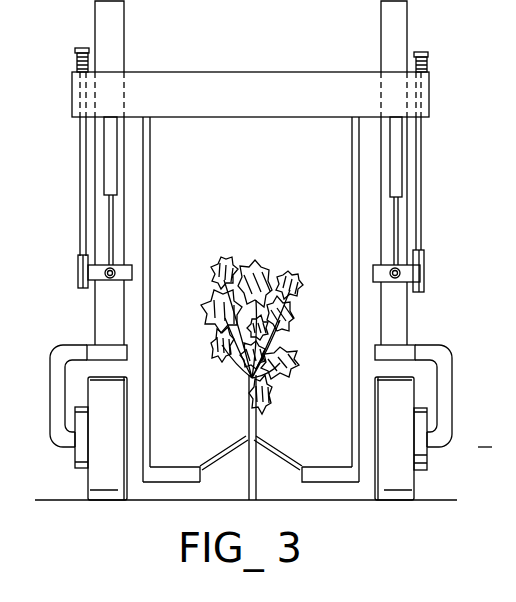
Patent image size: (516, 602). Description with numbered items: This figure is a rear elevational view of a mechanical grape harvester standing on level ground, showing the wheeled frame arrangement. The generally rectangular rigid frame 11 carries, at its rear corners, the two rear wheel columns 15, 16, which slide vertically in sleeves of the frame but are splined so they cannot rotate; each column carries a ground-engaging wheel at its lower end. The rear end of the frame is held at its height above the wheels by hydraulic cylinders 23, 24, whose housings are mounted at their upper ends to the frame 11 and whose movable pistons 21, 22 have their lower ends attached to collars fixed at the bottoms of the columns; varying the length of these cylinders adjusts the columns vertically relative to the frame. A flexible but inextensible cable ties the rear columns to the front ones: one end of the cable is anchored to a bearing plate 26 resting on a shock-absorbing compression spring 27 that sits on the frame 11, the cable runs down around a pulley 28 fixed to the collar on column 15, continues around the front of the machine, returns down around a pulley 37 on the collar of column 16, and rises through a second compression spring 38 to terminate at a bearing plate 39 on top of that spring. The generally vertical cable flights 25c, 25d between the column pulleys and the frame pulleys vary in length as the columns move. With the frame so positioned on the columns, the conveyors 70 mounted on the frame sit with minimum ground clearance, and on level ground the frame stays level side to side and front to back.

The rigid frame 11 is at (258, 68).
The rear wheel column 15 is at (388, 302).
The rear wheel column 16 is at (115, 323).
The movable piston 21 is at (395, 240).
The movable piston 22 is at (112, 250).
The hydraulic cylinder 23 is at (393, 172).
The hydraulic cylinder 24 is at (112, 168).
The cable flight 25c is at (412, 212).
The cable flight 25d is at (82, 212).
The bearing plate 26 is at (422, 52).
The shock-absorbing compression spring 27 is at (416, 64).
The pulley 28 is at (424, 281).
The pulley 37 is at (78, 279).
The shock-absorbing compression spring 38 is at (77, 63).
The bearing plate 39 is at (83, 48).
The conveyors 70 is at (183, 467).